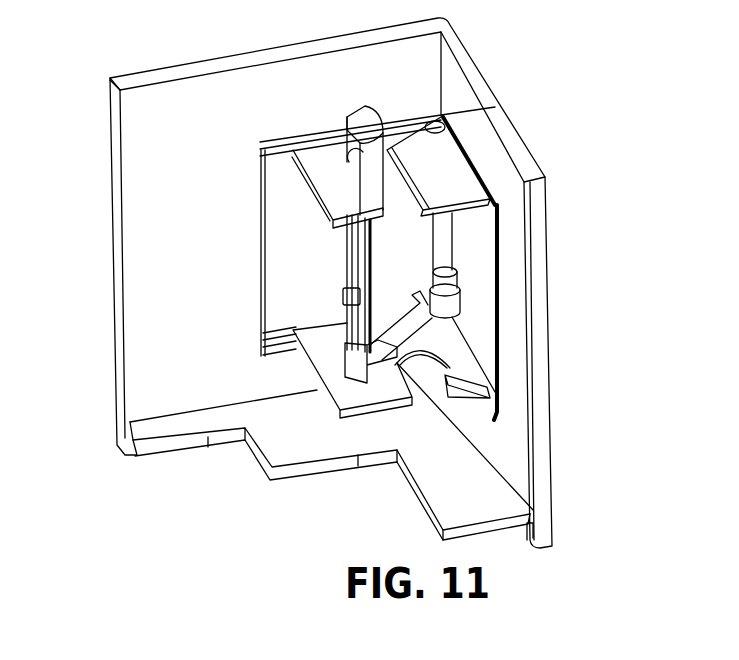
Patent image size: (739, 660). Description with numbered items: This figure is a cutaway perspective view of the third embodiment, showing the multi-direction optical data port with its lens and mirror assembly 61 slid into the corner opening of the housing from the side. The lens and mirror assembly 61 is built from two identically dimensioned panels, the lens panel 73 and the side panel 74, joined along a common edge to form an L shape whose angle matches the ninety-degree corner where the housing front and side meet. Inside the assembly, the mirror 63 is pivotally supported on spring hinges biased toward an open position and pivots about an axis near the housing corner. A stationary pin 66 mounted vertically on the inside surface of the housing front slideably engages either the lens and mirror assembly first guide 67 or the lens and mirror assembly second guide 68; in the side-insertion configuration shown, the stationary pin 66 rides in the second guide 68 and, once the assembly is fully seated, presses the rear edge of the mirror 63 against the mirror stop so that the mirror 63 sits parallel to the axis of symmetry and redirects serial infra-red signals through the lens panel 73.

The lens and mirror assembly 61 is at (360, 328).
The mirror 63 is at (421, 271).
The stationary pin 66 is at (444, 120).
The lens and mirror assembly first guide 67 is at (498, 423).
The lens and mirror assembly second guide 68 is at (407, 212).
The lens panel 73 is at (304, 271).
The side panel 74 is at (491, 270).